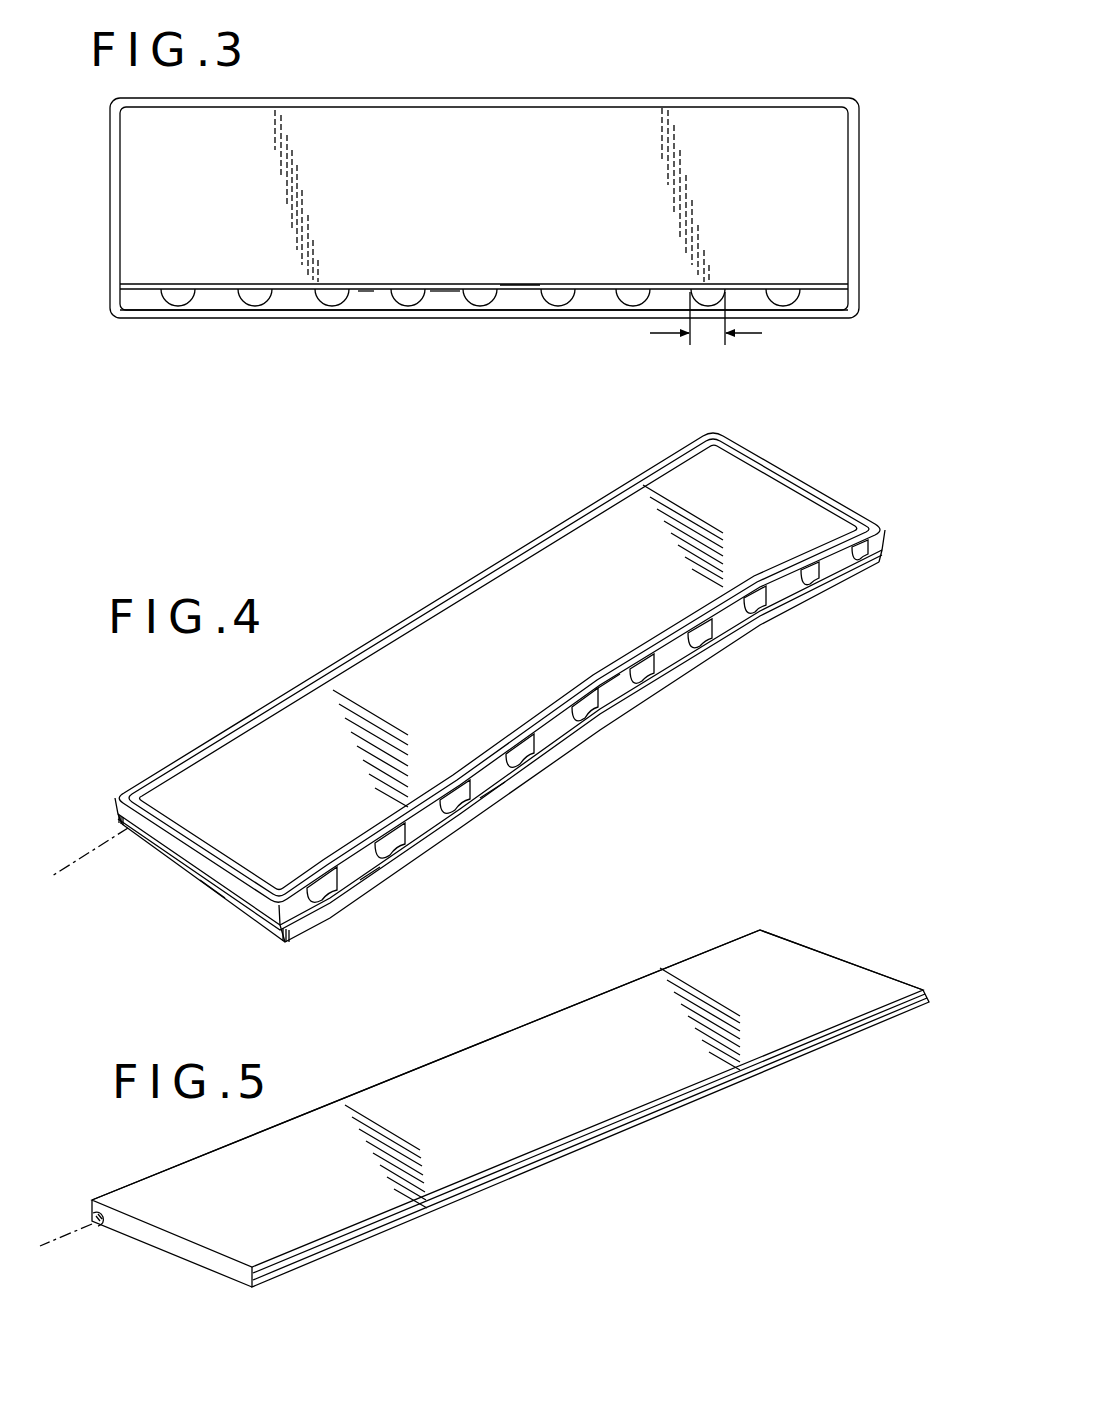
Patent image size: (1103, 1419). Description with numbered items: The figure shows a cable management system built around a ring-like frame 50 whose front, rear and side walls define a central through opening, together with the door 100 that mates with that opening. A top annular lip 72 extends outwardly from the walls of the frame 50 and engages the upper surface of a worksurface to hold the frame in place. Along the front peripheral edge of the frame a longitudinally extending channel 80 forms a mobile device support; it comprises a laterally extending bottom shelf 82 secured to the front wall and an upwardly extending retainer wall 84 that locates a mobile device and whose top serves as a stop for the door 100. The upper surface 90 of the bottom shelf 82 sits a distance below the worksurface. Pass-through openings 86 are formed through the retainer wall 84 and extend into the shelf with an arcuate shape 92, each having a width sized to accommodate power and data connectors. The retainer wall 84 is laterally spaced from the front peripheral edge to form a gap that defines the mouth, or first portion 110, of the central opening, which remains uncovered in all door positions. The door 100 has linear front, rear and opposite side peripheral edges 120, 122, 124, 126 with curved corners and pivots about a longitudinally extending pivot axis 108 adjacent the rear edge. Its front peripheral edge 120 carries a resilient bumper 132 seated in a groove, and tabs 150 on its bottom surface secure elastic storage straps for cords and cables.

In FIG. 3, the frame 50 is at (138, 318).
In FIG. 4, the frame 50 is at (340, 903).
In FIG. 3, the annular lip 72 is at (112, 232).
In FIG. 3, the channel 80 is at (217, 297).
In FIG. 3, the bottom shelf 82 is at (440, 295).
In FIG. 4, the bottom shelf 82 is at (490, 790).
In FIG. 4, the retainer wall 84 is at (370, 874).
In FIG. 3, the pass-through opening 86 is at (480, 334).
In FIG. 4, the pass-through opening 86 is at (583, 717).
In FIG. 3, the upper surface of the bottom shelf 90 is at (370, 297).
In FIG. 3, the arcuate shape 92 is at (257, 307).
In FIG. 3, the door 100 is at (485, 220).
In FIG. 4, the door 100 is at (502, 665).
In FIG. 5, the door 100 is at (513, 1118).
In FIG. 4, the pivot axis 108 is at (107, 868).
In FIG. 5, the pivot axis 108 is at (53, 1240).
In FIG. 3, the first portion of the central opening 110 is at (820, 250).
In FIG. 5, the first portion of the central opening 110 is at (103, 1227).
In FIG. 3, the front peripheral edge of the door 120 is at (557, 329).
In FIG. 4, the front peripheral edge of the door 120 is at (604, 643).
In FIG. 5, the front peripheral edge of the door 120 is at (590, 1146).
In FIG. 5, the rear peripheral edge of the door 122 is at (505, 1032).
In FIG. 5, the side peripheral edge of the door 124 is at (202, 1257).
In FIG. 5, the side peripheral edge of the door 126 is at (903, 927).
In FIG. 3, the resilient bumper 132 is at (520, 289).
In FIG. 4, the resilient bumper 132 is at (607, 682).
In FIG. 5, the resilient bumper 132 is at (355, 1247).
In FIG. 4, the tab 150 is at (213, 893).